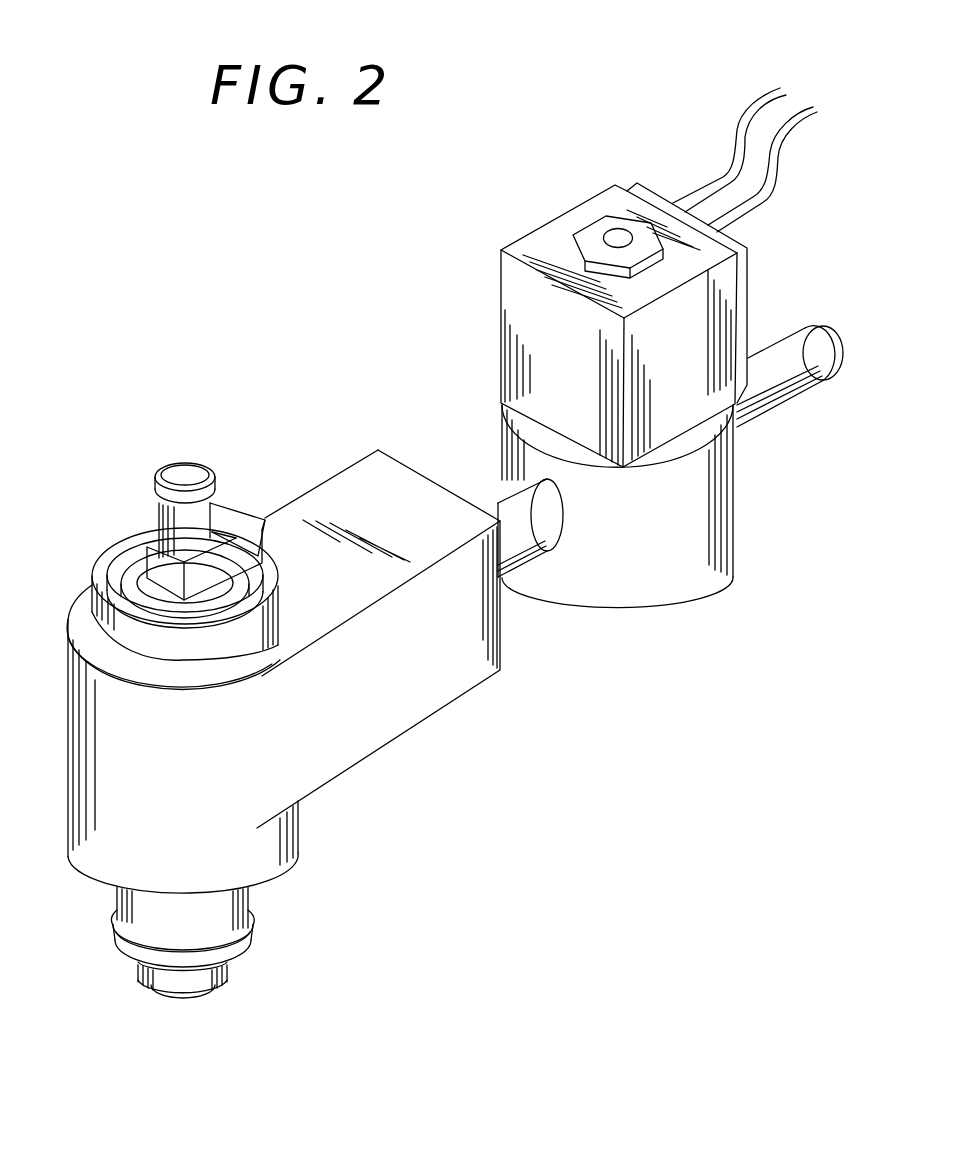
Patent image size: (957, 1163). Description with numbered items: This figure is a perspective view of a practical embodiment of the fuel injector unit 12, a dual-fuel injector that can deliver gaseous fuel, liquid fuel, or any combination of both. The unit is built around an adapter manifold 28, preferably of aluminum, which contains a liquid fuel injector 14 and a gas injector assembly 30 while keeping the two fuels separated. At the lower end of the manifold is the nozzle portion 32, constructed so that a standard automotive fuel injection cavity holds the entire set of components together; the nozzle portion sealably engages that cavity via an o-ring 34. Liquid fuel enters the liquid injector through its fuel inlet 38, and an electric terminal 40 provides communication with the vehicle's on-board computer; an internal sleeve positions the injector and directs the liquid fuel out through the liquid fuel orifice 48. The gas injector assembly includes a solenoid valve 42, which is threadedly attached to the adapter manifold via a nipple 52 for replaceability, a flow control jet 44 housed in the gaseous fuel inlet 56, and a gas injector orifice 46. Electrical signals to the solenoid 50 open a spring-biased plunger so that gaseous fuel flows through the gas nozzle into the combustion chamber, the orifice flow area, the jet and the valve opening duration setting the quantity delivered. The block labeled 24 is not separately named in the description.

The fuel injector unit 12 is at (290, 272).
The liquid fuel injector 14 is at (105, 555).
The valve body 24 is at (348, 464).
The adapter manifold 28 is at (70, 718).
The gas injector assembly 30 is at (516, 588).
The nozzle portion 32 is at (115, 897).
The o-ring 34 is at (252, 928).
The fuel inlet 38 is at (180, 465).
The electric terminal 40 is at (233, 500).
The solenoid valve 42 is at (733, 540).
The flow control jet 44 is at (838, 360).
The gas injector orifice 46 is at (228, 980).
The liquid fuel orifice 48 is at (175, 998).
The solenoid 50 is at (600, 185).
The nipple 52 is at (545, 520).
The fuel inlet 56 is at (770, 345).